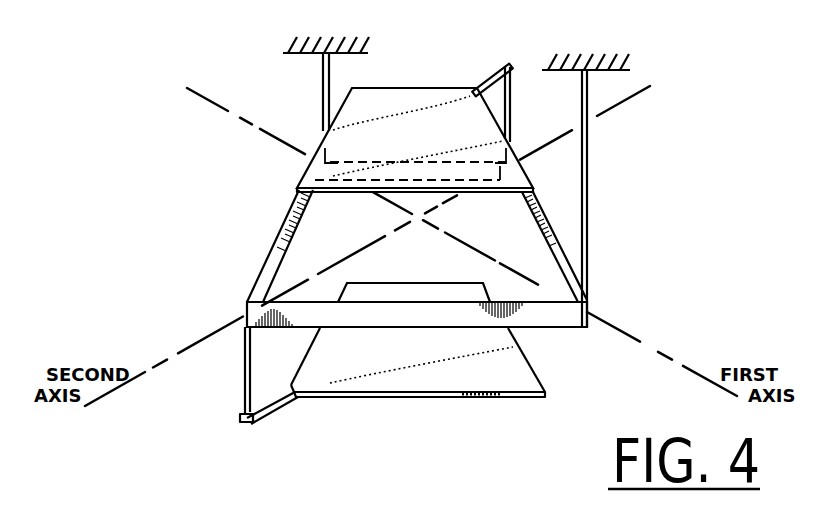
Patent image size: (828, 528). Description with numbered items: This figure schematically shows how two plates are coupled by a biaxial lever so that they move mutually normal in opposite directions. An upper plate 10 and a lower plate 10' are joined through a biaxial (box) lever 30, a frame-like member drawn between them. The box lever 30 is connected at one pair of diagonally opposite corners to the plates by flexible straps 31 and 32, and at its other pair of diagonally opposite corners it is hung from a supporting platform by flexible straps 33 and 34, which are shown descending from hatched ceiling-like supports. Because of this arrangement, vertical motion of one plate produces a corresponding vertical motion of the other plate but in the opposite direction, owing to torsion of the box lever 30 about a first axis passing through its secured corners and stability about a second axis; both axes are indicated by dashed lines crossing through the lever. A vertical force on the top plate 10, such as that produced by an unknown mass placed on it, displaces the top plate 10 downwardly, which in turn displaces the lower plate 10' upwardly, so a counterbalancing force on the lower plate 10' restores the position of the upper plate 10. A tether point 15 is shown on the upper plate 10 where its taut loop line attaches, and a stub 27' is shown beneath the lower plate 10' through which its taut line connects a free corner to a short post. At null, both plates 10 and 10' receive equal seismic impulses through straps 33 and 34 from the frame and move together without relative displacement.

The plate 10 is at (415, 122).
The plate 10' is at (418, 378).
The point 15 is at (468, 88).
The stub 27' is at (302, 401).
The biaxial (box) lever 30 is at (279, 249).
The flexible strap 31 is at (508, 117).
The flexible strap 32 is at (245, 378).
The flexible strap 33 is at (325, 101).
The flexible strap 34 is at (588, 160).